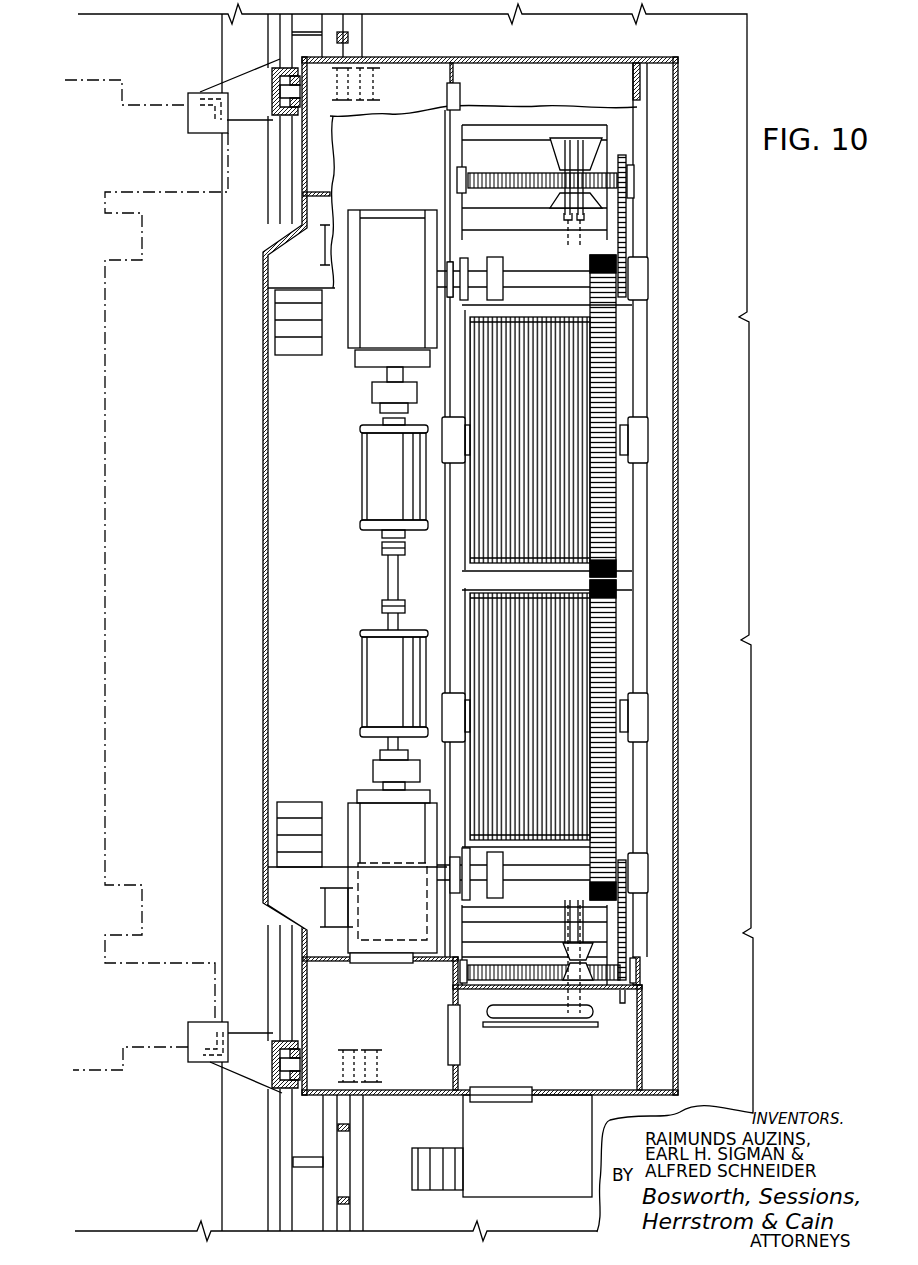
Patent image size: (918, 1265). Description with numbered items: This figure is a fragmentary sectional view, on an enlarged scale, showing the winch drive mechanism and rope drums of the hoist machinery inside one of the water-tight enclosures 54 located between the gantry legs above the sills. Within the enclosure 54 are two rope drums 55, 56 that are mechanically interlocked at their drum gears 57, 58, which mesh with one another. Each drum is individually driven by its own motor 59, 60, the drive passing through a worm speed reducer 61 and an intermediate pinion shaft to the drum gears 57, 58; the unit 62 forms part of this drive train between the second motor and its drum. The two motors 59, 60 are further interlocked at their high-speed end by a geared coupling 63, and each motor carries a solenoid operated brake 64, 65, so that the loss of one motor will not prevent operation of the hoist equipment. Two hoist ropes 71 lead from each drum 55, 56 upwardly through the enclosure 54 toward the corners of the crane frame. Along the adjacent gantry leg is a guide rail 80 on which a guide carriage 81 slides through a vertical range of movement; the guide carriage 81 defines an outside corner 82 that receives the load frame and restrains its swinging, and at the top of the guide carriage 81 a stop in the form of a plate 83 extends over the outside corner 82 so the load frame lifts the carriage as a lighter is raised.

The enclosure 54 is at (680, 782).
The rope drum 55 is at (468, 498).
The rope drum 56 is at (470, 623).
The drum gear 57 is at (615, 342).
The drum gear 58 is at (615, 648).
The motor 59 is at (375, 467).
The motor 60 is at (373, 678).
The worm speed reducer 61 is at (398, 190).
The drive unit 62 is at (368, 830).
The geared coupling 63 is at (392, 587).
The solenoid operated brake 64 is at (372, 393).
The solenoid operated brake 65 is at (382, 765).
The hoist rope 71 is at (580, 900).
The guide rail 80 is at (290, 116).
The guide carriage 81 is at (229, 80).
The outside corner 82 is at (210, 108).
The plate 83 is at (186, 123).